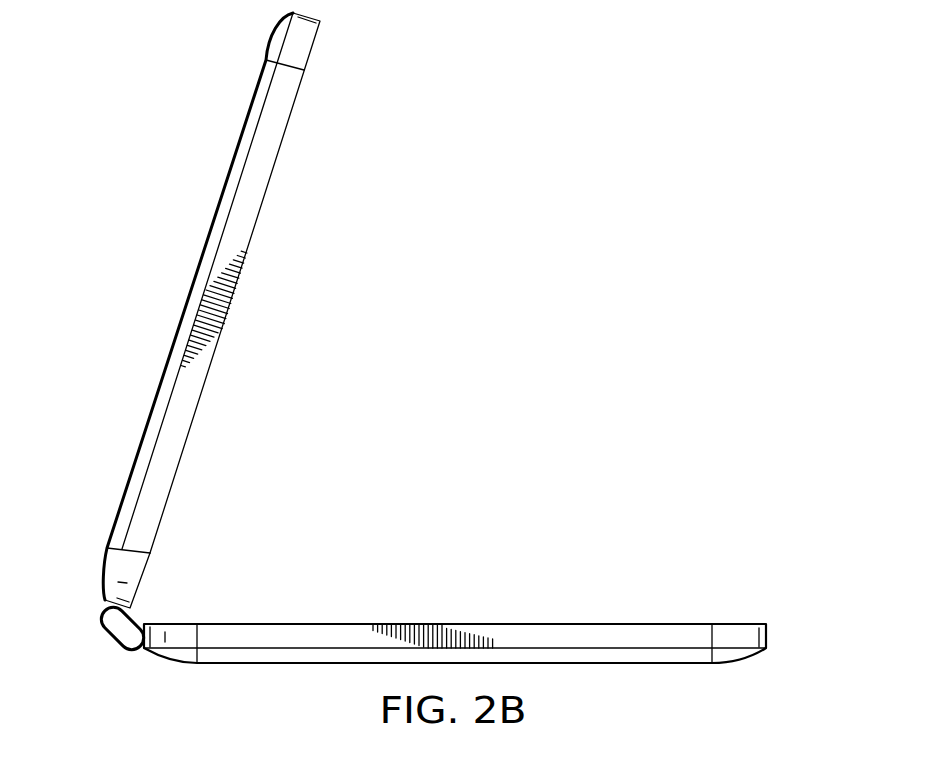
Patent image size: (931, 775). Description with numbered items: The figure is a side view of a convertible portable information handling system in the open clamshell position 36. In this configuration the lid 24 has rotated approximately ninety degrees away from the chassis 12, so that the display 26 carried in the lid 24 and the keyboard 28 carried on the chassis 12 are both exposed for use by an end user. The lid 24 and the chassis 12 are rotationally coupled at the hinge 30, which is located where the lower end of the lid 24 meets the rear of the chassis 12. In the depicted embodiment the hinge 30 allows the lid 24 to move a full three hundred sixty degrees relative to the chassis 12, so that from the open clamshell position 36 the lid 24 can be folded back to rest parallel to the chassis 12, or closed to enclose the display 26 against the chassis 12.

The chassis 12 is at (598, 665).
The lid 24 is at (183, 303).
The display 26 is at (279, 193).
The keyboard 28 is at (456, 623).
The hinge 30 is at (101, 636).
The open clamshell position 36 is at (521, 366).